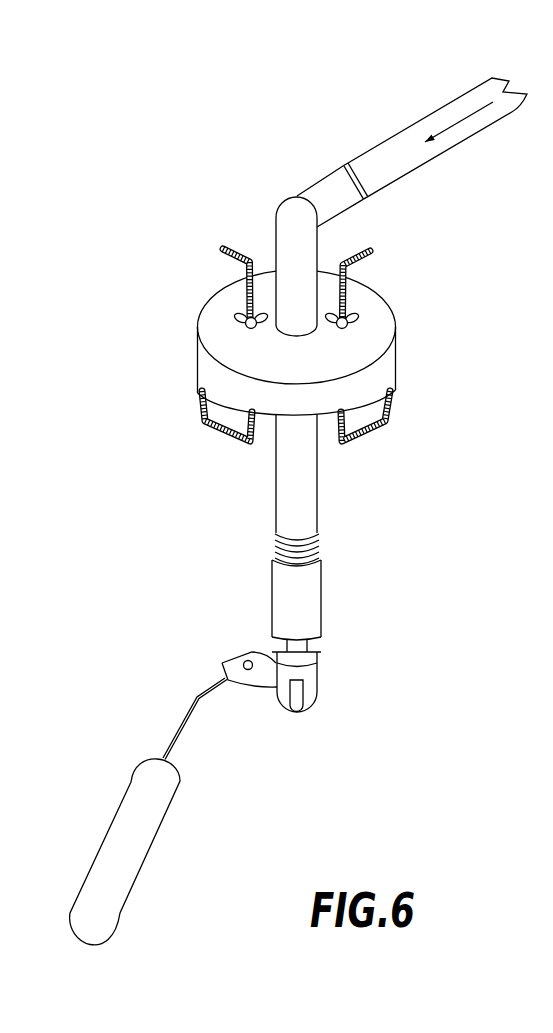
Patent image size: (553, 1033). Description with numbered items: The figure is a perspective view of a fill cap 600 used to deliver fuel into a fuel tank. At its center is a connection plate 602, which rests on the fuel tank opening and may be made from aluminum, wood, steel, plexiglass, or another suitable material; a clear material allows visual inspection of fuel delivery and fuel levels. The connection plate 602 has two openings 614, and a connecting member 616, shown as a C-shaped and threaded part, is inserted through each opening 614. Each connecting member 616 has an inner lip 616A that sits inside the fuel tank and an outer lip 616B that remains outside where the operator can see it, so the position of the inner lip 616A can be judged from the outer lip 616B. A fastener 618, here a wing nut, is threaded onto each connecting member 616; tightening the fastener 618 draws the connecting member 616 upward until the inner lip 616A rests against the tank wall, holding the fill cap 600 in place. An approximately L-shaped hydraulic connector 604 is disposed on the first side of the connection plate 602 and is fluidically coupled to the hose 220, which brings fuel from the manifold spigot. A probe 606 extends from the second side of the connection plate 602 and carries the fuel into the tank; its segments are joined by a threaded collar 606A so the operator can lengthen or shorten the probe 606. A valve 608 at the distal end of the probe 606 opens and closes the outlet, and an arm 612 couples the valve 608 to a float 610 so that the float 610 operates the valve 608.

The hose 220 is at (452, 102).
The fill cap 600 is at (262, 237).
The connection plate 602 is at (196, 335).
The hydraulic connector 604 is at (278, 196).
The probe 606 is at (231, 555).
The threaded collar 606A is at (320, 546).
The valve 608 is at (319, 672).
The float 610 is at (127, 790).
The arm 612 is at (188, 702).
The opening 614 is at (238, 324).
The connecting member 616 is at (265, 437).
The inner lip 616A is at (185, 413).
The outer lip 616B is at (237, 262).
The fastener 618 is at (244, 316).